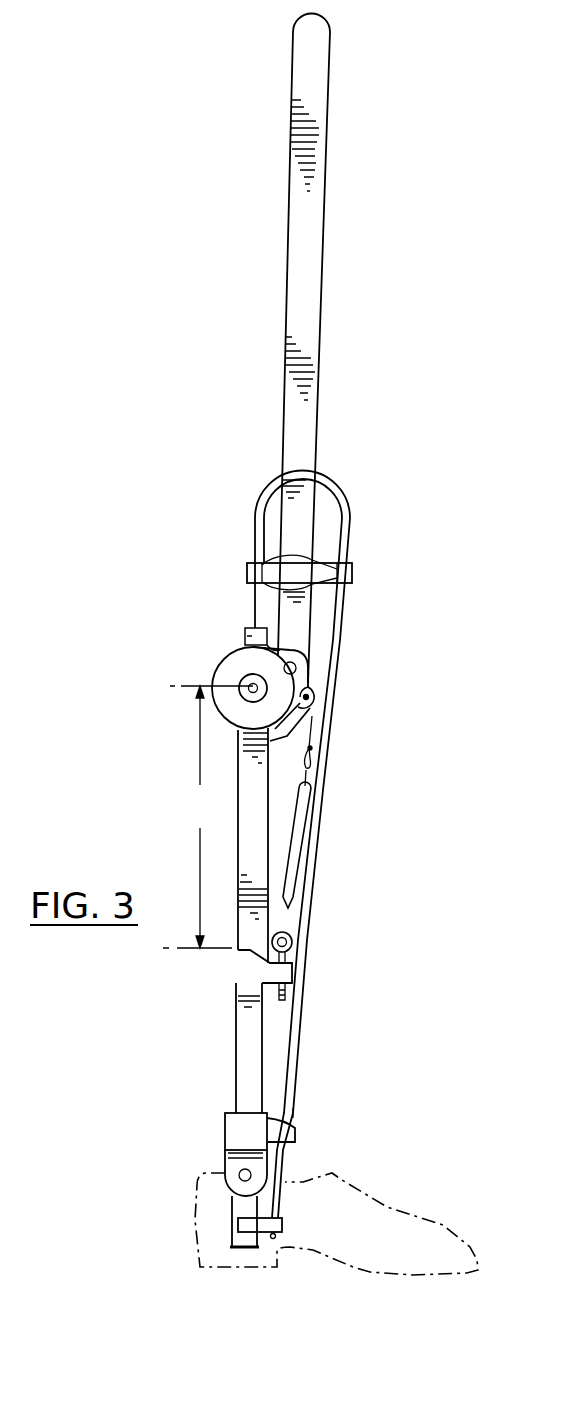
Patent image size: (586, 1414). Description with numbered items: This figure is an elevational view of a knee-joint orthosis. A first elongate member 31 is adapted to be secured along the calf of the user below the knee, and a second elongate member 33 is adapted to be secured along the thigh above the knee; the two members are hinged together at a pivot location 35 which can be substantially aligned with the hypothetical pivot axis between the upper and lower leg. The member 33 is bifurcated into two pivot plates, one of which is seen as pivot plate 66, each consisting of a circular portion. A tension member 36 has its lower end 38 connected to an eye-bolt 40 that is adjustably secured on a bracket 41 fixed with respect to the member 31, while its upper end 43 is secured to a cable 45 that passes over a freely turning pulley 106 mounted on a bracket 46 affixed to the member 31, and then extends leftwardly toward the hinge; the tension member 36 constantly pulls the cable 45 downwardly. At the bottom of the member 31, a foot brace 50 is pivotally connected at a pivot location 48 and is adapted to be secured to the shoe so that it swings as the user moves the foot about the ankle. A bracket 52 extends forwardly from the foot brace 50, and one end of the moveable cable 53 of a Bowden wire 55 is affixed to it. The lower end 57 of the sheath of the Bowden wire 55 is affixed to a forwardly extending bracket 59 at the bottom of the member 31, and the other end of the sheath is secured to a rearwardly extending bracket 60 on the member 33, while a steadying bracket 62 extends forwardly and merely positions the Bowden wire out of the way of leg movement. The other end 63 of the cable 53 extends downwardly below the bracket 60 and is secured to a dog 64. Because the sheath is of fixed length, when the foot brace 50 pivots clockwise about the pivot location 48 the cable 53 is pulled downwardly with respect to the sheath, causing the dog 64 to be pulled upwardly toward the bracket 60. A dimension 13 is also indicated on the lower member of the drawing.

The shank length dimension 13 is at (208, 817).
The first elongate member 31 is at (248, 850).
The second elongate member 33 is at (310, 209).
The pivot location 35 is at (250, 684).
The tension member 36 is at (298, 843).
The lower end of the tension member 38 is at (288, 922).
The eye-bolt 40 is at (285, 956).
The bracket 41 is at (260, 975).
The upper end of the tension member 43 is at (313, 777).
The cable 45 is at (313, 725).
The bracket 46 is at (284, 737).
The pivot location 48 is at (243, 1170).
The foot brace 50 is at (232, 1242).
The bracket 52 is at (285, 1222).
The moveable cable 53 is at (283, 1160).
The Bowden wire 55 is at (298, 1027).
The lower end of the sheath 57 is at (293, 1113).
The bracket 59 is at (225, 1113).
The bracket 60 is at (293, 567).
The steadying bracket 62 is at (333, 571).
The other end of the cable 63 is at (252, 604).
The dog 64 is at (243, 636).
The pivot plate 66 is at (234, 714).
The pulley 106 is at (310, 700).